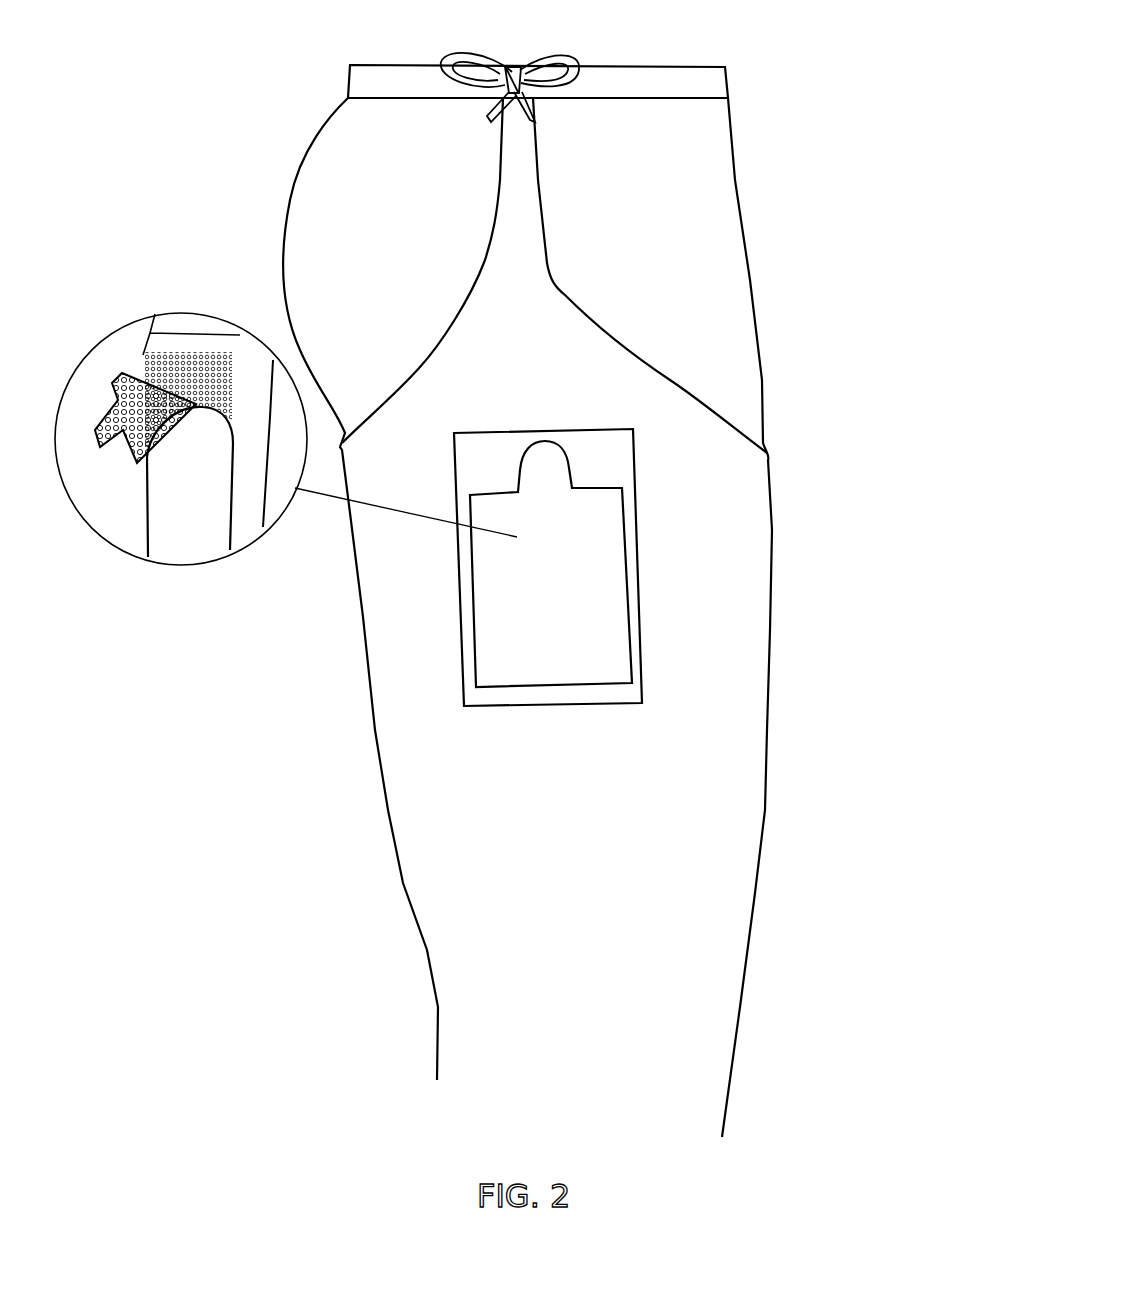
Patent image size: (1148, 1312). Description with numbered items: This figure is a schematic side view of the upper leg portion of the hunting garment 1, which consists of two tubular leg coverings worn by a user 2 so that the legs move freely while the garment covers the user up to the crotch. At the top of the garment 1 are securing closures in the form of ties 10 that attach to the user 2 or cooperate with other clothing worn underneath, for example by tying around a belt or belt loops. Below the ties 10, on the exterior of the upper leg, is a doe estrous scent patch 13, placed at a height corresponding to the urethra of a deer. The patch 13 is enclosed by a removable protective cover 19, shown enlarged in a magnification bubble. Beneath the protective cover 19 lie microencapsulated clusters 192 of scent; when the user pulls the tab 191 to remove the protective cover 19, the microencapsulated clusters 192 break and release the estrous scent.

The garment 1 is at (522, 320).
The user 2 is at (337, 122).
The ties 10 is at (570, 63).
The estrous scent patches 13 is at (632, 503).
The protective cover 19 is at (172, 548).
The tab 191 is at (550, 472).
The microencapsulated clusters 192 is at (187, 360).